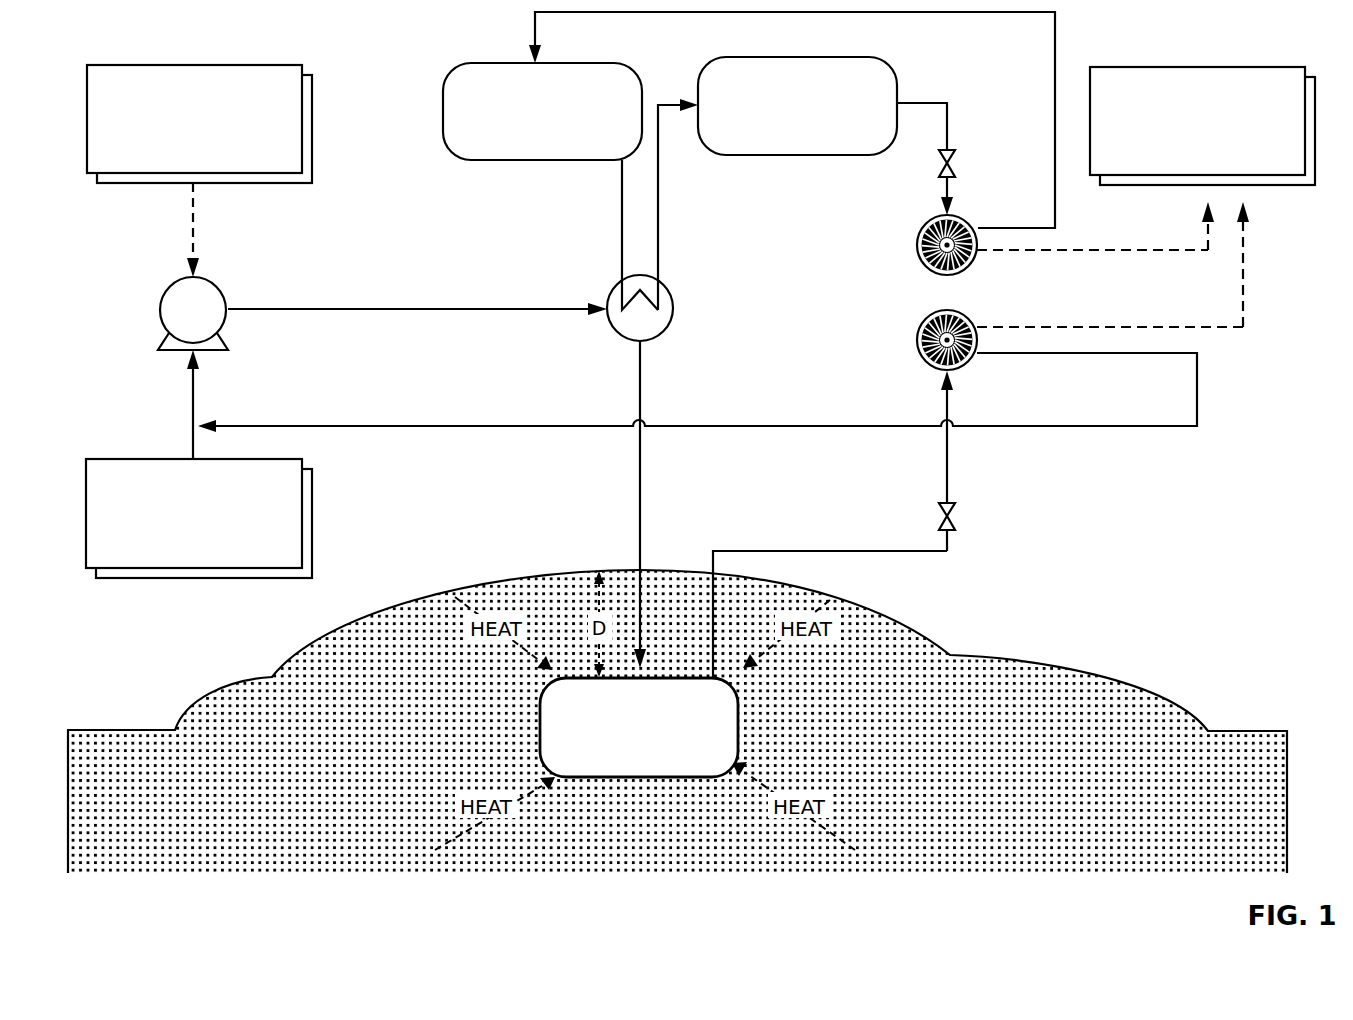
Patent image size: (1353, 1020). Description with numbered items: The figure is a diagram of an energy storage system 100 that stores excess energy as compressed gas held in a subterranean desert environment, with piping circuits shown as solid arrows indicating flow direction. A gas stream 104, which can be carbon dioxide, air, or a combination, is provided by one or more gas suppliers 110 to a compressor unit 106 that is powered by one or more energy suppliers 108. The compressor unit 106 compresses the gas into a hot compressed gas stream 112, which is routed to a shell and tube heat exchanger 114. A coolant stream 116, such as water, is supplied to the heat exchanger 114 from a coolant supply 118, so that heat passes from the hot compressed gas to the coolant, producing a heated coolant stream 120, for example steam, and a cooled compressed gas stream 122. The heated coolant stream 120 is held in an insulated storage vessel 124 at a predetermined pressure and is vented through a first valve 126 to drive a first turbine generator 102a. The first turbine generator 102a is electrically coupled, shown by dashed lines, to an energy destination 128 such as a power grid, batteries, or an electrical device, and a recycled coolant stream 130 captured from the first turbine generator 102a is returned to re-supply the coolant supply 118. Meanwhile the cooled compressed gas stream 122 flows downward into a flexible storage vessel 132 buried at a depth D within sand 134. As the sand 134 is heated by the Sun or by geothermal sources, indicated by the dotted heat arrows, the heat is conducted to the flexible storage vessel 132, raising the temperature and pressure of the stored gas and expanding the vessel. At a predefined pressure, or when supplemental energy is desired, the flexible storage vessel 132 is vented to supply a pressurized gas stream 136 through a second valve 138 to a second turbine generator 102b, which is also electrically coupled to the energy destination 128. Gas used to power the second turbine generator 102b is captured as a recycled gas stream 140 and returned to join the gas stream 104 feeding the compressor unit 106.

The energy storage system 100 is at (1235, 46).
The first turbine generator 102a is at (925, 235).
The second turbine generator 102b is at (920, 330).
The gas stream 104 is at (193, 405).
The compressor unit 106 is at (175, 322).
The energy supplier 108 is at (177, 145).
The gas supplier 110 is at (287, 527).
The hot compressed gas stream 112 is at (356, 309).
The heat exchanger 114 is at (672, 298).
The coolant stream 116 is at (622, 232).
The coolant supply 118 is at (524, 139).
The heated coolant stream 120 is at (658, 235).
The cooled compressed gas stream 122 is at (640, 390).
The insulated storage vessel 124 is at (779, 145).
The first valve 126 is at (952, 155).
The energy destination 128 is at (1283, 145).
The recycled coolant stream 130 is at (1055, 95).
The flexible storage vessel 132 is at (660, 772).
The sand 134 is at (1004, 731).
The pressurized gas stream 136 is at (805, 551).
The second valve 138 is at (941, 505).
The recycled gas stream 140 is at (1197, 400).